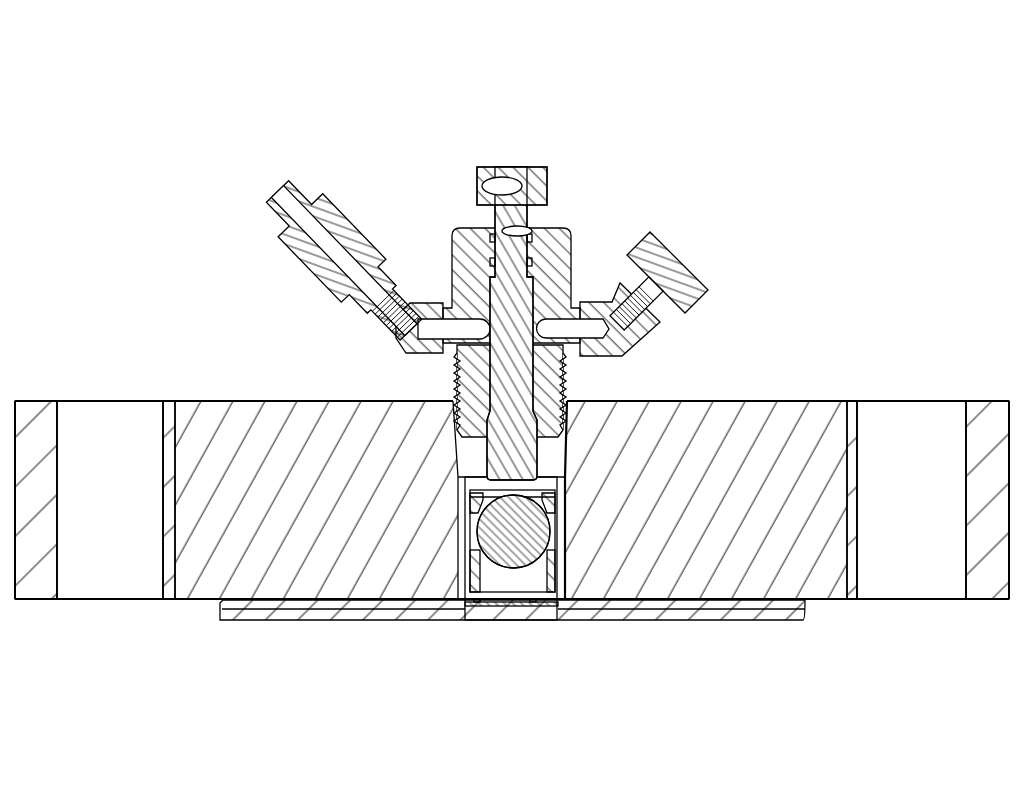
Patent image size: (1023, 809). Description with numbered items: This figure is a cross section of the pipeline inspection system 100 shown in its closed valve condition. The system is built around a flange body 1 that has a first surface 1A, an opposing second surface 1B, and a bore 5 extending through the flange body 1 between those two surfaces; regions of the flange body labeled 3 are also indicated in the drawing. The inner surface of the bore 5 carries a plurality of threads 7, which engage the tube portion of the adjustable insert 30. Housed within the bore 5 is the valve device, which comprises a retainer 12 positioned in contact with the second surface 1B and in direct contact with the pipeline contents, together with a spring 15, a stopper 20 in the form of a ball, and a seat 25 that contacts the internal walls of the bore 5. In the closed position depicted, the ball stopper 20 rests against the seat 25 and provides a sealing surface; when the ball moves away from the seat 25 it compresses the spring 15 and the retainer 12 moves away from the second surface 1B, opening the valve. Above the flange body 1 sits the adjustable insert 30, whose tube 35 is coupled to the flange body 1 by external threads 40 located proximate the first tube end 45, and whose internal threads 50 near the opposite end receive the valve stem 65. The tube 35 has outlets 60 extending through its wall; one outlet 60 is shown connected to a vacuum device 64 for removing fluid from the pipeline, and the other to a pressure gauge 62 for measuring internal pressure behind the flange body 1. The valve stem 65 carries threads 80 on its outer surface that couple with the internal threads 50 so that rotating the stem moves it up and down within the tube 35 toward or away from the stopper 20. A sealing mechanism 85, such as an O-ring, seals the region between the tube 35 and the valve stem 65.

The pipeline inspection system 100 is at (760, 78).
The flange body 1 is at (30, 590).
The first surface 1A is at (207, 399).
The second surface 1B is at (200, 601).
The fluid passage 3 is at (104, 509).
The bore 5 is at (482, 483).
The threads 7 is at (455, 430).
The retainer 12 is at (472, 602).
The spring 15 is at (547, 590).
The stopper 20 is at (510, 555).
The seat 25 is at (550, 505).
The adjustable insert 30 is at (569, 190).
The tube 35 is at (571, 240).
The external threads 40 is at (567, 386).
The first tube end 45 is at (572, 457).
The internal threads 50 is at (519, 228).
The outlet 60 is at (450, 303).
The pressure gauge 62 is at (690, 287).
The vacuum device 64 is at (322, 194).
The valve stem 65 is at (492, 215).
The threads 80 is at (497, 222).
The sealing mechanism 85 is at (491, 287).